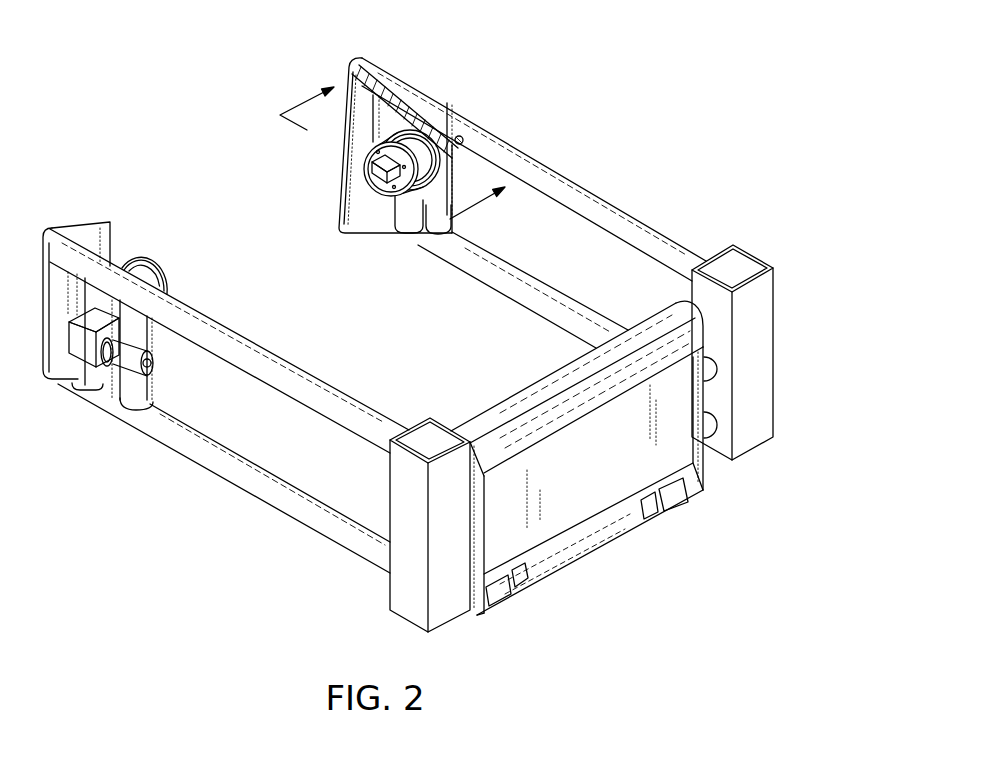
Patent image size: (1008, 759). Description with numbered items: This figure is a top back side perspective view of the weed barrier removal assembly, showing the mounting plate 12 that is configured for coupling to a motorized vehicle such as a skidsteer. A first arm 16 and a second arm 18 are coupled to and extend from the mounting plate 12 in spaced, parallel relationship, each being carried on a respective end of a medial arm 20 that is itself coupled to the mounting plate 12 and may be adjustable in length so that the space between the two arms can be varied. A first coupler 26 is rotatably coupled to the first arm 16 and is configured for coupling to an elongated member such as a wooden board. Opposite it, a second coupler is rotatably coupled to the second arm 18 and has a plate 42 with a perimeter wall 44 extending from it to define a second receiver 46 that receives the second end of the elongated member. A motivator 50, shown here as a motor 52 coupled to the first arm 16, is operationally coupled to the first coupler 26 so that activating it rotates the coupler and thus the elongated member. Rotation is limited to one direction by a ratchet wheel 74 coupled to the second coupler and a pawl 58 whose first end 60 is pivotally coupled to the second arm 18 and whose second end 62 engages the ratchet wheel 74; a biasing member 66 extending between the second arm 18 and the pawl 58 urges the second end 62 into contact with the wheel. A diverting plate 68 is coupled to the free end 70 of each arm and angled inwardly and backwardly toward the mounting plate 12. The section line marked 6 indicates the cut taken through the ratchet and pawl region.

The mounting plate 12 is at (567, 512).
The first arm 16 is at (198, 472).
The second arm 18 is at (613, 188).
The medial arm 20 is at (541, 373).
The first coupler 26 is at (153, 250).
The plate 42 is at (421, 236).
The perimeter wall 44 is at (394, 188).
The second receiver 46 is at (376, 186).
The motivator 50 is at (78, 376).
The motor 52 is at (108, 382).
The pawl 58 is at (437, 156).
The first end 60 is at (456, 137).
The second end 62 is at (433, 166).
The biasing member 66 is at (393, 98).
The diverting plate 68 is at (110, 221).
The free end 70 is at (55, 227).
The ratchet wheel 74 is at (428, 146).
The section line 6- 6 is at (398, 139).